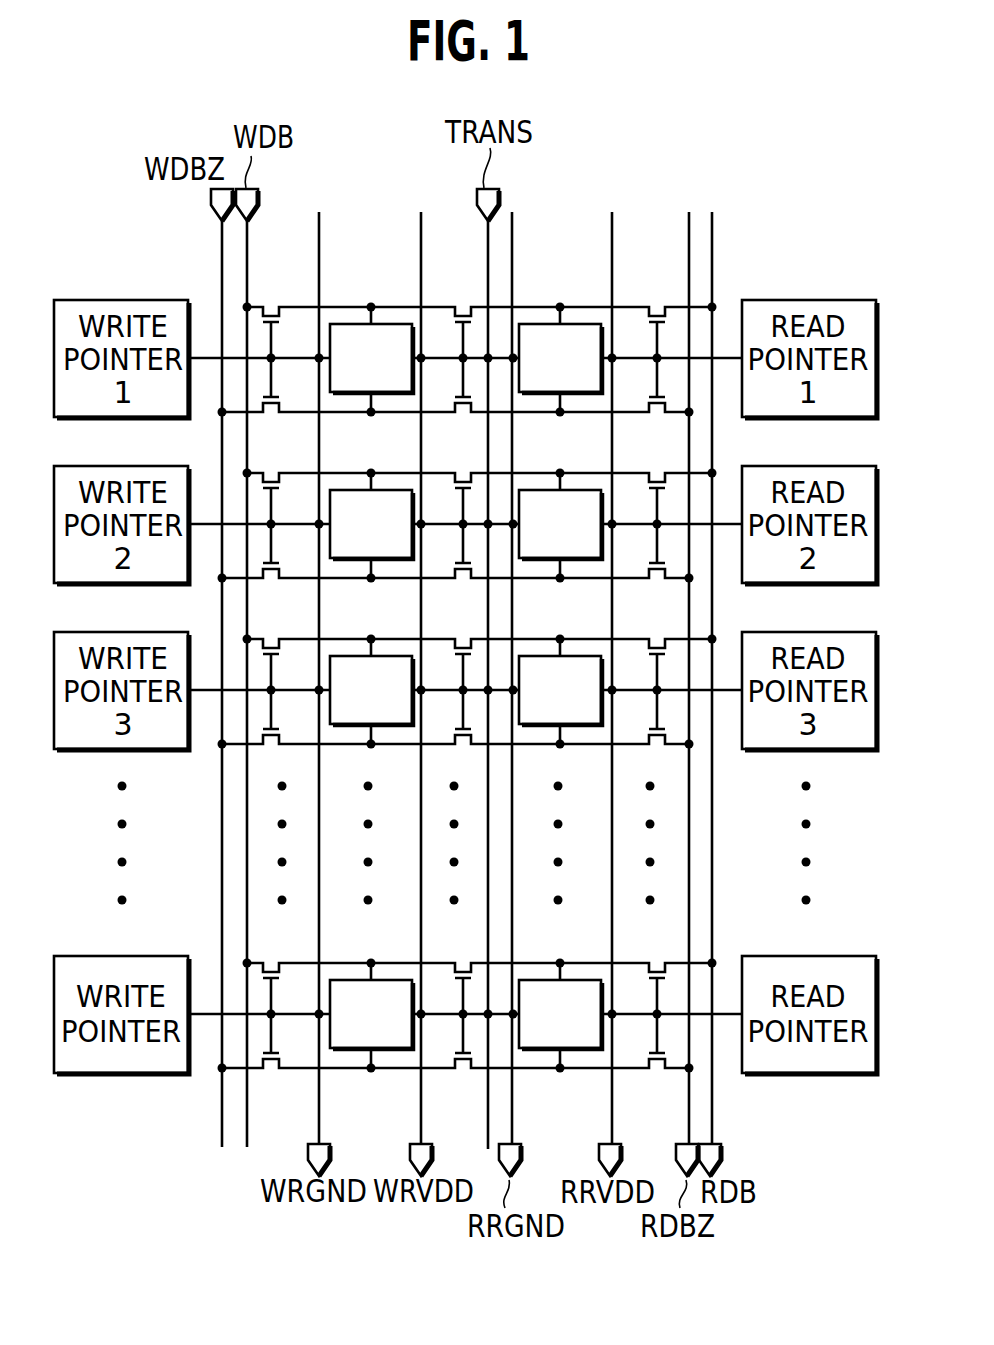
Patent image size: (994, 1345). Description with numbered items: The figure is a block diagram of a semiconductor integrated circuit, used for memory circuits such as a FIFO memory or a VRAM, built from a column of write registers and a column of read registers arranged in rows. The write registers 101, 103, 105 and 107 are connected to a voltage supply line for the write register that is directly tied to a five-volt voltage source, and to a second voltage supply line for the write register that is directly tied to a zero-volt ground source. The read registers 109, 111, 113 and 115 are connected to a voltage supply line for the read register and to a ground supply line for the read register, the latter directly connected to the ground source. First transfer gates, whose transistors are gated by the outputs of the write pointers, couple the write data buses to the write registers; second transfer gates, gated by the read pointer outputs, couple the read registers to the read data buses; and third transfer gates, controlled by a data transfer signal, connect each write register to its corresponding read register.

The write register 101 is at (354, 393).
The write register 103 is at (354, 559).
The write register 105 is at (354, 725).
The write register 107 is at (354, 1049).
The read register 109 is at (546, 393).
The read register 111 is at (546, 559).
The read register 113 is at (546, 725).
The read register 115 is at (546, 1049).